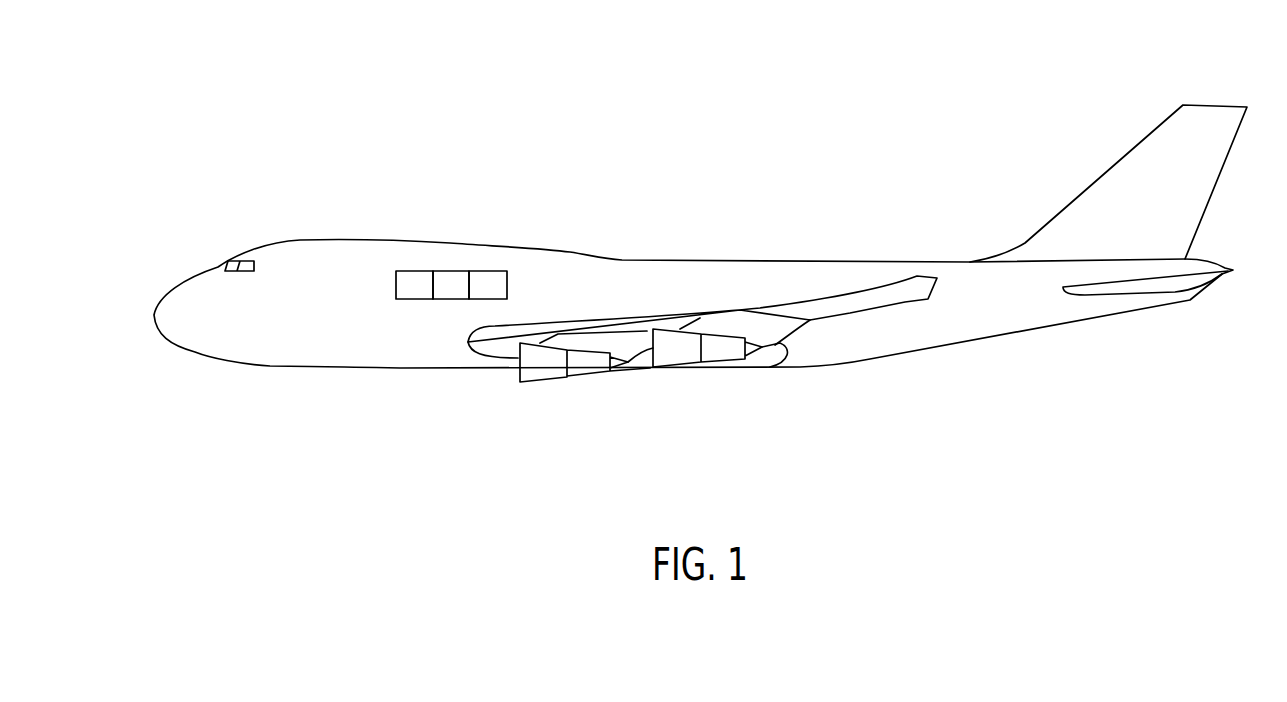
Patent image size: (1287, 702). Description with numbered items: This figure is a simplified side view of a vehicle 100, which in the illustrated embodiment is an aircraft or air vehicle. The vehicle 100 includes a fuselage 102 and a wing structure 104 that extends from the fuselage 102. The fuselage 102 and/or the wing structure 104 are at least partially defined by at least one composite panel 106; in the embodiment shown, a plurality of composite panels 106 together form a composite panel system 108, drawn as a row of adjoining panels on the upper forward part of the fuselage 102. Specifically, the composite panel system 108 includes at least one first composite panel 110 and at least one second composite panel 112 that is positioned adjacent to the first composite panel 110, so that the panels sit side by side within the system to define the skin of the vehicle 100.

The vehicle 100 is at (700, 223).
The fuselage 102 is at (677, 280).
The wing structure 104 is at (768, 322).
The composite panel 106 is at (408, 271).
The composite panel system 108 is at (472, 222).
The first composite panel 110 is at (450, 271).
The second composite panel 112 is at (489, 271).